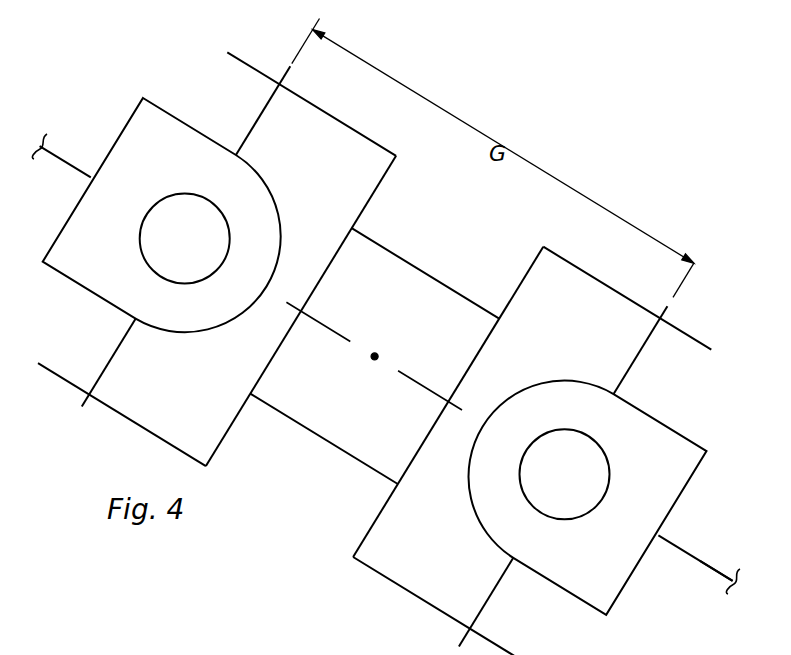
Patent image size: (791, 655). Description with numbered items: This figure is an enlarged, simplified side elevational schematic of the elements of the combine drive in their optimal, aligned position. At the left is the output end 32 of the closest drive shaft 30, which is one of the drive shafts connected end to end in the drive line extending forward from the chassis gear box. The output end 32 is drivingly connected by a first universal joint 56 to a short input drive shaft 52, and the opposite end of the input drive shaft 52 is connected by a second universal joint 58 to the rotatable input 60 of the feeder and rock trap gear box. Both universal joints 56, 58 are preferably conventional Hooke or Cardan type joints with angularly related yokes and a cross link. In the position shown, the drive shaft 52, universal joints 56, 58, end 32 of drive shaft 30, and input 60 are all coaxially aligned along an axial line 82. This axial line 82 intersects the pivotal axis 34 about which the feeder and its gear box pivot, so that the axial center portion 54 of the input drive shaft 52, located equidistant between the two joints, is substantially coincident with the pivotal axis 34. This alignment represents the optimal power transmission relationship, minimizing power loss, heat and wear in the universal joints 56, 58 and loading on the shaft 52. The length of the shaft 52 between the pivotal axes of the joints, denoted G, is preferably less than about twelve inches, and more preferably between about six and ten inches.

The drive shaft 30 is at (50, 150).
The output end 32 is at (81, 169).
The pivotal axis 34 is at (375, 356).
The input drive shaft 52 is at (435, 278).
The axial center portion 54 is at (422, 352).
The first universal joint 56 is at (337, 121).
The second universal joint 58 is at (597, 281).
The rotatable input 60 is at (681, 545).
The axial line 82 is at (723, 569).